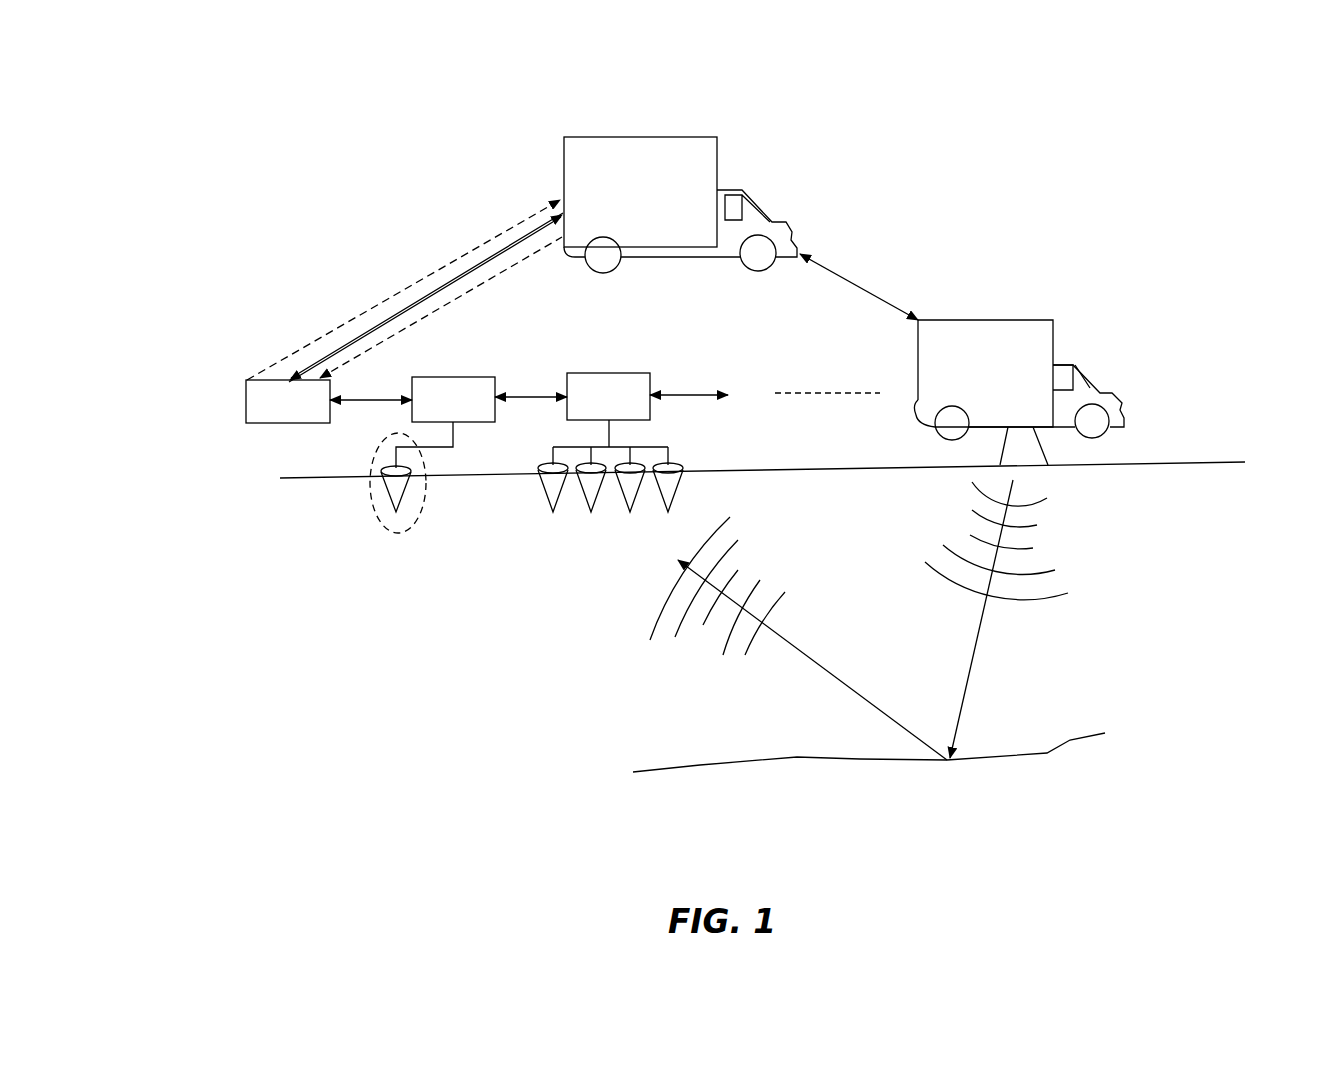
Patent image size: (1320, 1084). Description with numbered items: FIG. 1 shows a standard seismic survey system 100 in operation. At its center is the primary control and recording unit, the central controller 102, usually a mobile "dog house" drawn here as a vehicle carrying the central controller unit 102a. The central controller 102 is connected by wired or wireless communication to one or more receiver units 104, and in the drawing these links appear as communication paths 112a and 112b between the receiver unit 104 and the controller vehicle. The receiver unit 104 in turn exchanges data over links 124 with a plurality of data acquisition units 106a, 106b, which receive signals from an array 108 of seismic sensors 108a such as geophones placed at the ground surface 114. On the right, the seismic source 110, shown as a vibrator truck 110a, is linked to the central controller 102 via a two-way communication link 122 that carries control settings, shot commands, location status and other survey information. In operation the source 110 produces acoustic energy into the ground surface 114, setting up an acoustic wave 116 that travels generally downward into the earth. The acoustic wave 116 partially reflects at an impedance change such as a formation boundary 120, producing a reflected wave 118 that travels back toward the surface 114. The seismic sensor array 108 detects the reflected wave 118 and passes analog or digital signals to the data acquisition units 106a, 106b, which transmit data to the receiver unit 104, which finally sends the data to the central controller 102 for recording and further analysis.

The survey system 100 is at (1031, 166).
The central controller 102 is at (722, 185).
The central controller 102a is at (645, 155).
The receiver unit 104 is at (246, 385).
The data acquisition unit 106a is at (433, 377).
The data acquisition unit 106b is at (623, 373).
The array of seismic sensors 108 is at (599, 532).
The seismic sensor 108a is at (385, 530).
The seismic source 110 is at (1057, 370).
The vibrator truck 110a is at (997, 340).
The communication link 112a is at (406, 300).
The communication link 112b is at (490, 272).
The ground surface 114 is at (1147, 462).
The acoustic wave 116 is at (1100, 580).
The reflected wave 118 is at (729, 666).
The formation boundary 120 is at (996, 760).
The two-way communication link 122 is at (845, 280).
The communication links a-b 124 is at (368, 402).